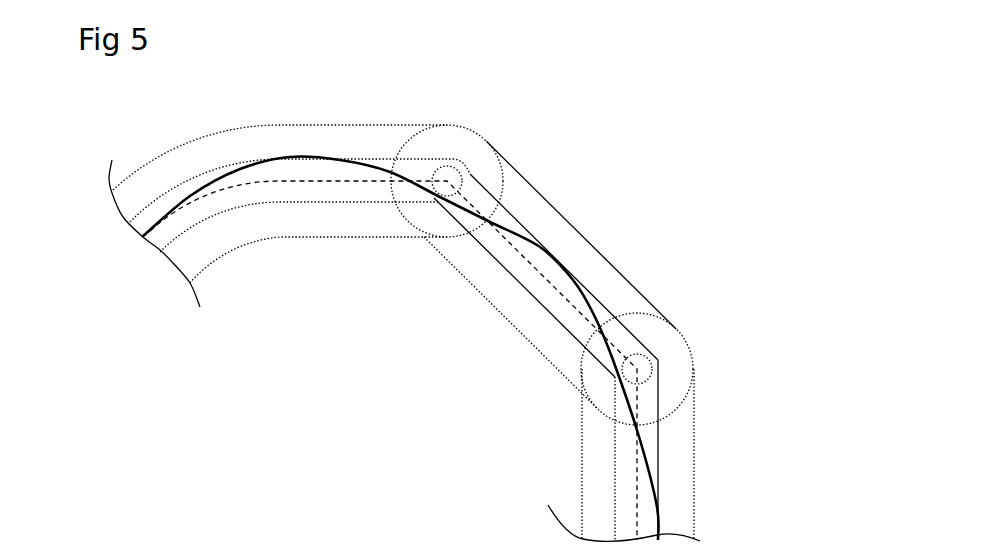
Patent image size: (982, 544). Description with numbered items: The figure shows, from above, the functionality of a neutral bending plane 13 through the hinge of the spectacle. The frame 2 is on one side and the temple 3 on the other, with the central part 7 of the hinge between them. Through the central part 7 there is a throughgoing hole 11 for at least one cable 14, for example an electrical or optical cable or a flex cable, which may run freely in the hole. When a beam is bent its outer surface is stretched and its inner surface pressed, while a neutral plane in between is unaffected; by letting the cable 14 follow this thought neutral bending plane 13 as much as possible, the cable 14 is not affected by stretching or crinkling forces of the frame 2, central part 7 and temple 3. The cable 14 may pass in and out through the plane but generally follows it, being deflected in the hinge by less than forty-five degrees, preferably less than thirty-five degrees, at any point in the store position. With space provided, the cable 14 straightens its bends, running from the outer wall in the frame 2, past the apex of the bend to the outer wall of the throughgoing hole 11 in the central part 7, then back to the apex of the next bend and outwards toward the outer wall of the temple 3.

The frame 2 is at (237, 223).
The temple 3 is at (677, 473).
The central part 7 is at (558, 230).
The throughgoing hole 11 is at (597, 312).
The neutral bending plane 13 is at (312, 182).
The cable 14 is at (363, 165).